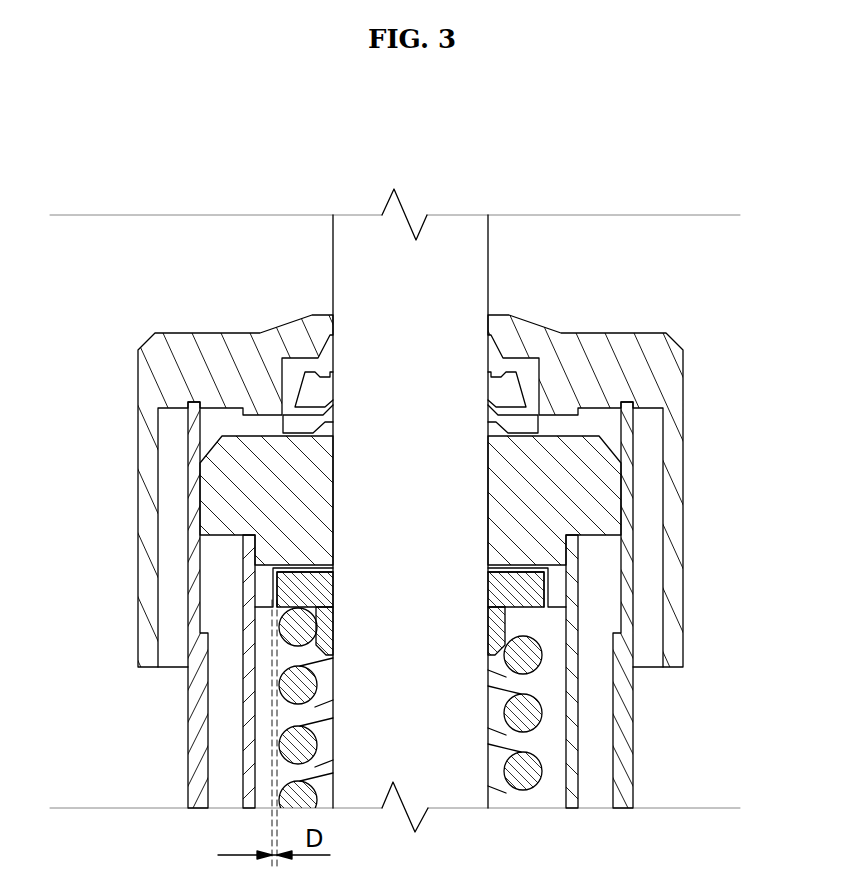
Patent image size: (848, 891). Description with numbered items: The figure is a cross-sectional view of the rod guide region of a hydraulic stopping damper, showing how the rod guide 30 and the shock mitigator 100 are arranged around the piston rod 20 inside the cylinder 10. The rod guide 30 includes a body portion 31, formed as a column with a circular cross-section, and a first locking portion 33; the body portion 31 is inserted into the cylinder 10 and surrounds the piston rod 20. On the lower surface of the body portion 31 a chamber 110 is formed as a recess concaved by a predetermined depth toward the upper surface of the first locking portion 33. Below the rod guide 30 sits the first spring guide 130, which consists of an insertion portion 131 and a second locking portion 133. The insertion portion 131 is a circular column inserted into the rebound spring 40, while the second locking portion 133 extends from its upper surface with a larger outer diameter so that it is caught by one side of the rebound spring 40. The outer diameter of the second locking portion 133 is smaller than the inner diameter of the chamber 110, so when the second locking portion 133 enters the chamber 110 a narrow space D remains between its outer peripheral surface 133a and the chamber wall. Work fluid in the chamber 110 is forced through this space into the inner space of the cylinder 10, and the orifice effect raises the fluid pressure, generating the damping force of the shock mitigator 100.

The cylinder 10 is at (625, 765).
The piston rod 20 is at (456, 237).
The rod guide 30 is at (424, 555).
The body portion 31 is at (262, 584).
The first locking portion 33 is at (227, 487).
The rebound spring 40 is at (533, 795).
The shock mitigator 100 is at (415, 714).
The chamber 110 is at (523, 568).
The first spring guide 130 is at (415, 695).
The insertion portion 131 is at (497, 637).
The second locking portion 133 is at (527, 598).
The outer peripheral surface 133a is at (340, 605).